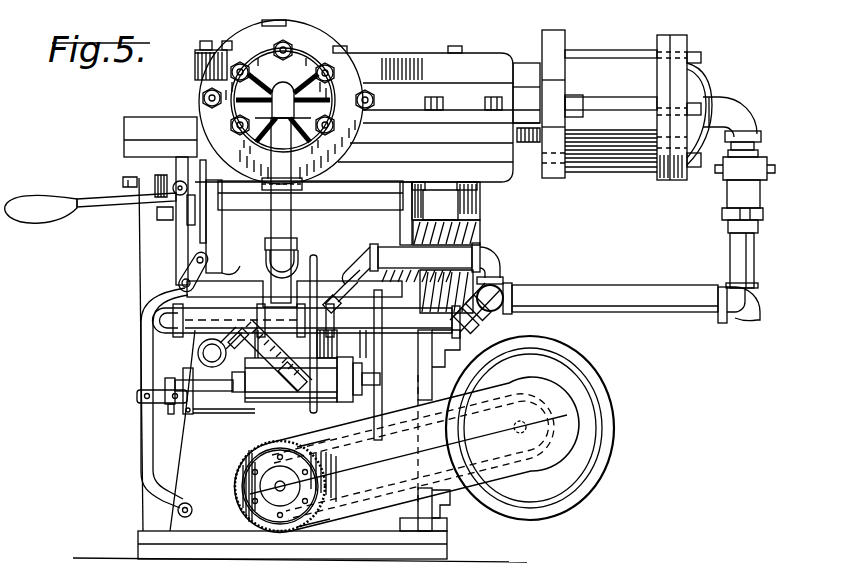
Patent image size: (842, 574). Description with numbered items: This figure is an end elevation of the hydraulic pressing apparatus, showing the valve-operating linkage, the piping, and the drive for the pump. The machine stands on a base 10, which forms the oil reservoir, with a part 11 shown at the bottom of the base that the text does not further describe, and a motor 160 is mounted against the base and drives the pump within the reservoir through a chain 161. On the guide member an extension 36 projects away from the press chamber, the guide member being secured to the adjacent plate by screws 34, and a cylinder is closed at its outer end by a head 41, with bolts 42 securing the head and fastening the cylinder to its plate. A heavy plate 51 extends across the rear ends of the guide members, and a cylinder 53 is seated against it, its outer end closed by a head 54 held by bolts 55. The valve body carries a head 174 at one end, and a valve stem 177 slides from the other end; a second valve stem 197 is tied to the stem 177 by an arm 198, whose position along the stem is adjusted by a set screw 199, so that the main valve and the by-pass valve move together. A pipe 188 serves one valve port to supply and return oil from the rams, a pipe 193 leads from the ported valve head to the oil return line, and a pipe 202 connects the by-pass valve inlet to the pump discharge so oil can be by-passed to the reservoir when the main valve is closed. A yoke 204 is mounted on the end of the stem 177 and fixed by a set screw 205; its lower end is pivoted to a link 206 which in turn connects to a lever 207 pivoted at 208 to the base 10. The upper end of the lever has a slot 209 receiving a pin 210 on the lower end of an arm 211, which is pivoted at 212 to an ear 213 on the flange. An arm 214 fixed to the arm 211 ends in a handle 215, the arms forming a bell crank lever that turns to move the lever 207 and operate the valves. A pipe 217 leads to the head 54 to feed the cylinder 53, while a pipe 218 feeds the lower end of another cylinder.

The base 10 is at (190, 448).
The base 11 is at (138, 552).
The screws 34 is at (438, 100).
The extension 36 is at (468, 72).
The head 41 is at (293, 50).
The bolts 42 is at (333, 72).
The heavy plate 51 is at (562, 30).
The cylinder 53 is at (611, 108).
The head 54 is at (682, 43).
The bolts 55 is at (584, 162).
The motor 160 is at (612, 418).
The chain 161 is at (345, 449).
The head 174 is at (382, 383).
The valve stem 177 is at (140, 395).
The pipe 188 is at (340, 312).
The pipe 193 is at (258, 395).
The valve stem 197 is at (238, 422).
The arm 198 is at (189, 418).
The set screw 199 is at (200, 352).
The pipe 202 is at (315, 262).
The yoke 204 is at (170, 415).
The set screw 205 is at (143, 345).
The link 206 is at (150, 418).
The lever 207 is at (144, 364).
The pivot 208 is at (186, 503).
The slot 209 is at (208, 267).
The pin 210 is at (182, 283).
The arm 211 is at (178, 248).
The pivot 212 is at (176, 184).
The ear 213 is at (182, 163).
The arm 214 is at (126, 213).
The handle 215 is at (38, 197).
The pipe 217 is at (740, 258).
The pipe 218 is at (236, 322).